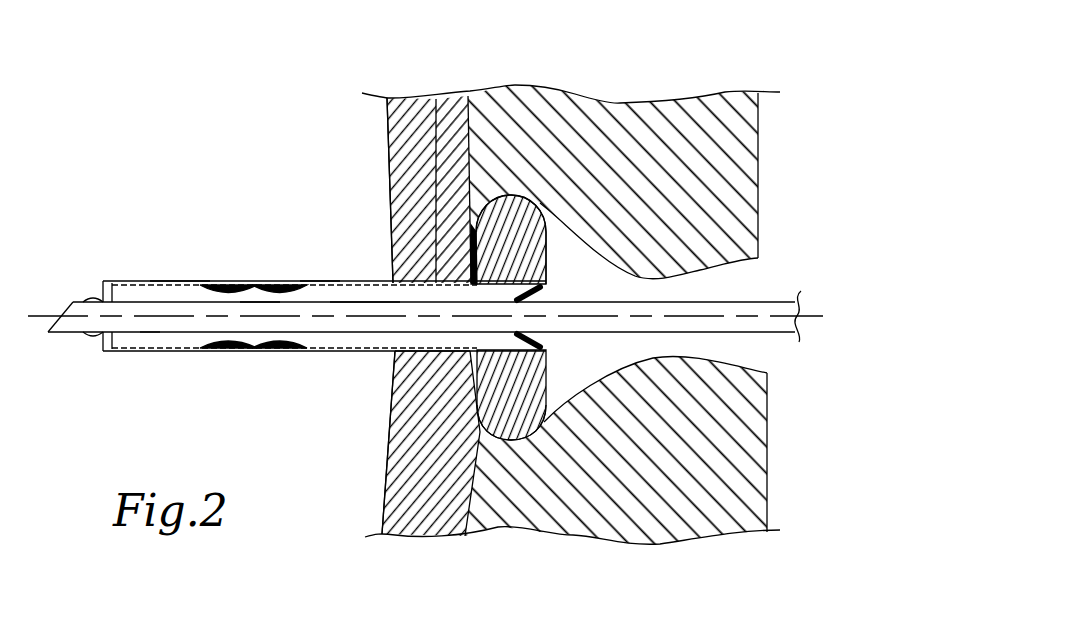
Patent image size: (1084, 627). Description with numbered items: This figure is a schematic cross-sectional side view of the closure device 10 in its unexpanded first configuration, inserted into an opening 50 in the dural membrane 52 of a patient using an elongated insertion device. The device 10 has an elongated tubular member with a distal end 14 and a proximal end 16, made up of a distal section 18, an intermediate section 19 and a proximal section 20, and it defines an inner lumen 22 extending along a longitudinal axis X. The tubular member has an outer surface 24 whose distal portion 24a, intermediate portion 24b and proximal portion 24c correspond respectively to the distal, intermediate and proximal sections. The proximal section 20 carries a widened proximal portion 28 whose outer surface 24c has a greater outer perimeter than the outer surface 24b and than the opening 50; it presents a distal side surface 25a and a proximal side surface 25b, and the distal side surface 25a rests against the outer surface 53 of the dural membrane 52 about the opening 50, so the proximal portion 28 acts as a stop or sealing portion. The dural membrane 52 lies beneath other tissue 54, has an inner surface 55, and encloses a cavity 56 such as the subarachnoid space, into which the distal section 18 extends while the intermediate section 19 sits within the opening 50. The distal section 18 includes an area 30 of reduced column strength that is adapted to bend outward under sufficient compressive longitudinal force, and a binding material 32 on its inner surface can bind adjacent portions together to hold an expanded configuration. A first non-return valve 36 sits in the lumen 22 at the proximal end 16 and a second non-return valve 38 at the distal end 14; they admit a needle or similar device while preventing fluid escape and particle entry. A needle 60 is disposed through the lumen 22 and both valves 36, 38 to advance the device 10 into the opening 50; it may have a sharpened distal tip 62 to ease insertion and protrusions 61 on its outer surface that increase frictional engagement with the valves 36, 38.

The closure device 10 is at (318, 222).
The distal end 14 is at (112, 268).
The proximal end 16 is at (552, 345).
The distal section 18 is at (178, 268).
The intermediate section 19 is at (396, 392).
The proximal section 20 is at (522, 185).
The inner lumen 22 is at (369, 300).
The outer surface 24 is at (292, 278).
The distal portion of outer surface 24a is at (210, 272).
The intermediate portion of outer surface 24b is at (395, 272).
The proximal portion of outer surface 24c is at (507, 193).
The distal side surface 25a is at (420, 440).
The proximal side surface 25b is at (547, 267).
The proximal portion 28 is at (548, 213).
The area of reduced column strength 30 is at (254, 290).
The binding material 32 is at (226, 350).
The first non-return valve 36 is at (532, 300).
The second non-return valve 38 is at (104, 351).
The opening 50 is at (440, 100).
The dural membrane 52 is at (407, 105).
The outer surface of dural membrane 53 is at (470, 490).
The tissue 54 is at (720, 130).
The inner surface of dural membrane 55 is at (386, 488).
The cavity 56 is at (272, 427).
The needle 60 is at (150, 320).
The protrusions 61 is at (91, 294).
The distal tip 62 is at (46, 333).
The longitudinal axis X is at (823, 317).